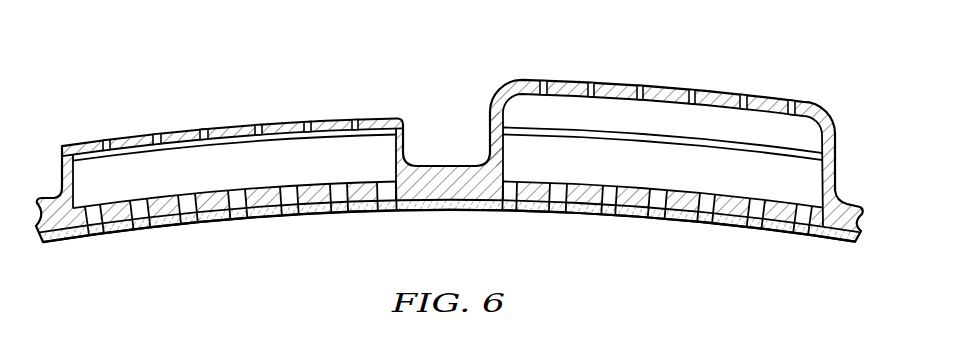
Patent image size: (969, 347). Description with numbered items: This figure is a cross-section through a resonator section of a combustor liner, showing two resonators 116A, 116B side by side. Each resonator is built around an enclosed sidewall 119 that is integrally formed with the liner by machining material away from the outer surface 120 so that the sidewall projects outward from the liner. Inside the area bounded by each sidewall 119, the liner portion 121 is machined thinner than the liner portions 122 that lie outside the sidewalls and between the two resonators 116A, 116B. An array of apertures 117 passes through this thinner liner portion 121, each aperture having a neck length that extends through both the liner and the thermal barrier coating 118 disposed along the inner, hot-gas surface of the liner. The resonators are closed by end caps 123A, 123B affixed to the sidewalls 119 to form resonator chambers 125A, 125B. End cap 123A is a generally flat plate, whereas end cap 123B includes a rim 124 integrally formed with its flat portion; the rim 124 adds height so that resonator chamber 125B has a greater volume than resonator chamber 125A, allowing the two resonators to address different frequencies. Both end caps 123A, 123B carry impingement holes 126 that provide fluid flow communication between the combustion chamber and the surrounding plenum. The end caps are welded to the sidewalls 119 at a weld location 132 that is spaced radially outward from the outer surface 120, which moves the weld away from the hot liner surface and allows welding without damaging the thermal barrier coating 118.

The resonator 116A is at (232, 122).
The resonator 116B is at (669, 120).
The aperture 117 is at (290, 200).
The thermal barrier coating 118 is at (66, 246).
The enclosed sidewall 119 is at (60, 176).
The outer surface 120 is at (449, 144).
The liner portion 121 is at (157, 207).
The liner portion 122 is at (440, 177).
The end cap 123A is at (330, 112).
The end cap 123B is at (565, 78).
The rim 124 is at (488, 120).
The resonator chamber 125A is at (268, 178).
The resonator chamber 125B is at (659, 178).
The impingement hole 126 is at (307, 126).
The weld location 132 is at (62, 160).